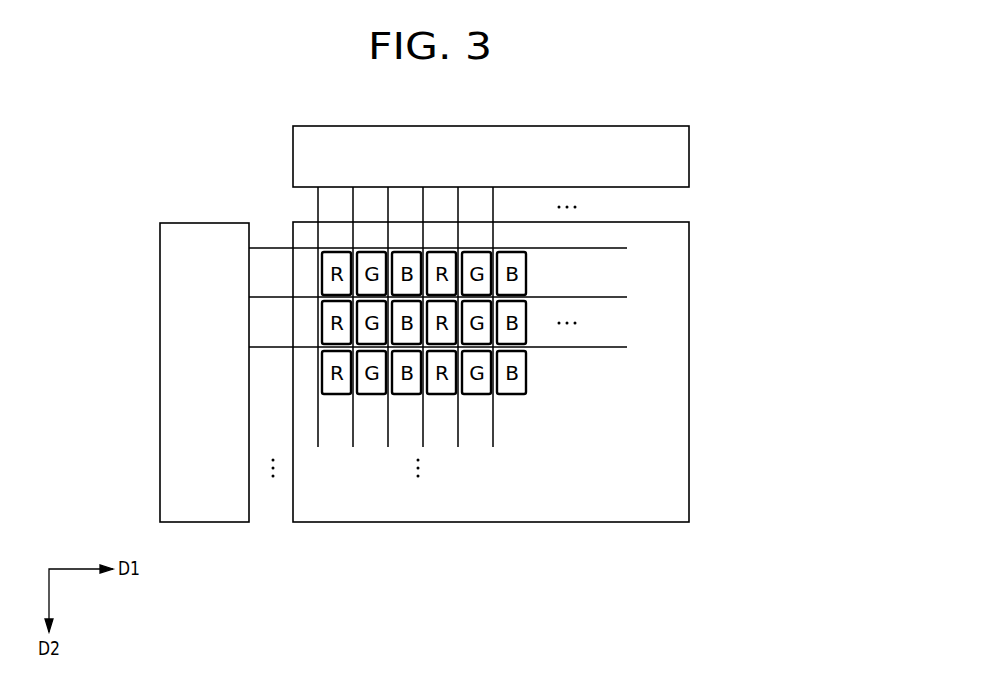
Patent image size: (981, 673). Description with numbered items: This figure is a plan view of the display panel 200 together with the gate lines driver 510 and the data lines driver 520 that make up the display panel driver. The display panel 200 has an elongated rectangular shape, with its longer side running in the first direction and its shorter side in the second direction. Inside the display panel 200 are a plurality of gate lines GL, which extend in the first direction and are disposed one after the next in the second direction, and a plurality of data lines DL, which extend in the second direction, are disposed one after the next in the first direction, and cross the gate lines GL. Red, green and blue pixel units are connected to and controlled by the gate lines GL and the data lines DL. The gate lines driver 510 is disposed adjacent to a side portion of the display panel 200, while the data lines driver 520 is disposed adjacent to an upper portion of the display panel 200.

The data lines driver 520 is at (689, 155).
The gate lines driver 510 is at (202, 522).
The display panel 200 is at (538, 522).
The data lines DL is at (318, 205).
The gate lines GL is at (271, 249).